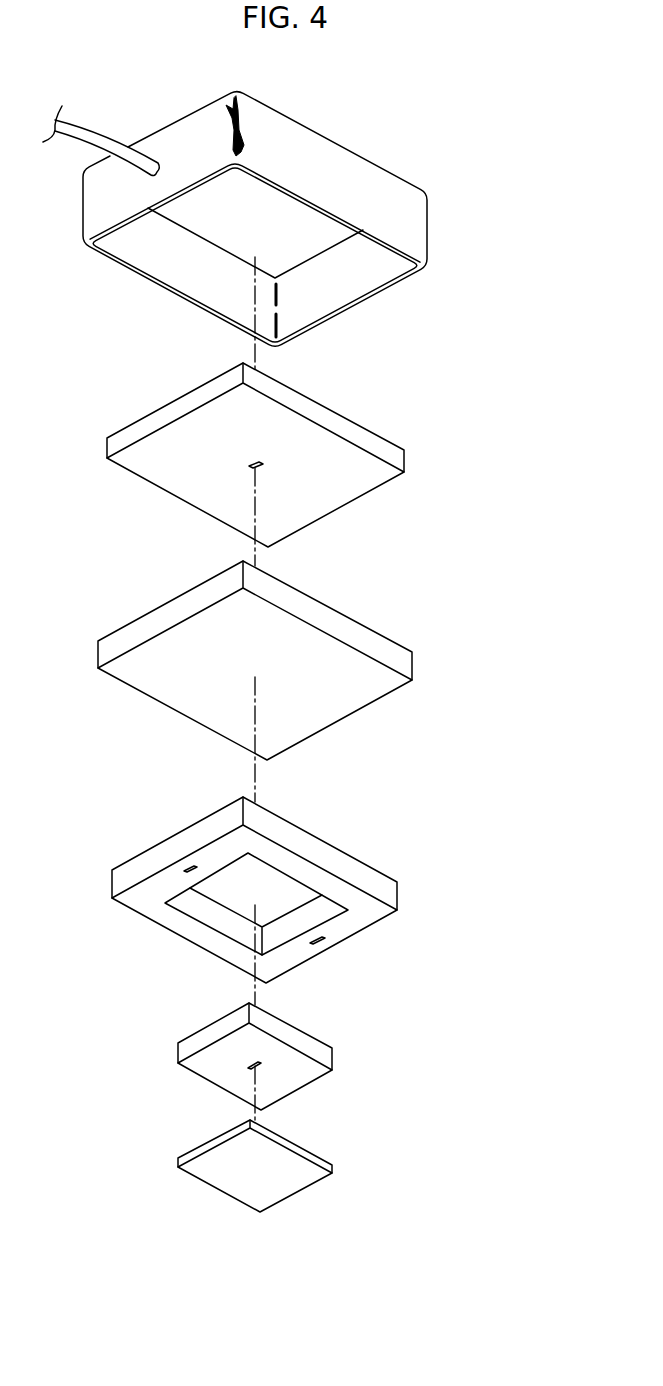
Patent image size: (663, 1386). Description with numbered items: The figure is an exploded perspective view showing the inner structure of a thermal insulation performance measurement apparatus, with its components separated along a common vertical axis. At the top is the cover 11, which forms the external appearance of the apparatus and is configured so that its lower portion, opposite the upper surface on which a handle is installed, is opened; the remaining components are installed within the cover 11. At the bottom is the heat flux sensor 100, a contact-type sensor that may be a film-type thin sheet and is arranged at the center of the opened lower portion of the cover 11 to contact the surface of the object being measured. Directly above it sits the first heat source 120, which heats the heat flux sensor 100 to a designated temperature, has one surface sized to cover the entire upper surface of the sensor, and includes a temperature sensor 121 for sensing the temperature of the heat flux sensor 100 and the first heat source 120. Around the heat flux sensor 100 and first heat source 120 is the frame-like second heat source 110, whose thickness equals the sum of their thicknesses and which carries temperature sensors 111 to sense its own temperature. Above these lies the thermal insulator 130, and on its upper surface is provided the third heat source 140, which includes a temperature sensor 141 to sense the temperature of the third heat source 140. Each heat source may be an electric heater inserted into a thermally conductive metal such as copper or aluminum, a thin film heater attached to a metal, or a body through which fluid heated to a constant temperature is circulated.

The cover 11 is at (422, 228).
The heat flux sensor 100 is at (327, 1168).
The second heat source 110 is at (390, 893).
The temperature sensors 111 is at (186, 868).
The first heat source 120 is at (327, 1052).
The temperature sensor 121 is at (250, 1066).
The thermal insulator 130 is at (407, 665).
The third heat source 140 is at (392, 460).
The temperature sensor 141 is at (250, 465).